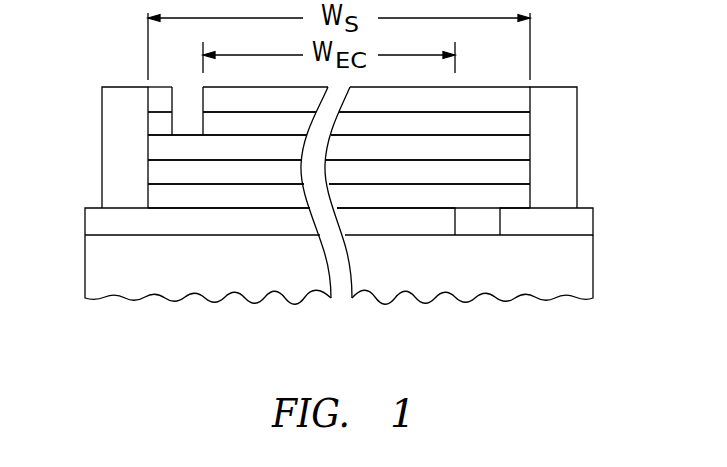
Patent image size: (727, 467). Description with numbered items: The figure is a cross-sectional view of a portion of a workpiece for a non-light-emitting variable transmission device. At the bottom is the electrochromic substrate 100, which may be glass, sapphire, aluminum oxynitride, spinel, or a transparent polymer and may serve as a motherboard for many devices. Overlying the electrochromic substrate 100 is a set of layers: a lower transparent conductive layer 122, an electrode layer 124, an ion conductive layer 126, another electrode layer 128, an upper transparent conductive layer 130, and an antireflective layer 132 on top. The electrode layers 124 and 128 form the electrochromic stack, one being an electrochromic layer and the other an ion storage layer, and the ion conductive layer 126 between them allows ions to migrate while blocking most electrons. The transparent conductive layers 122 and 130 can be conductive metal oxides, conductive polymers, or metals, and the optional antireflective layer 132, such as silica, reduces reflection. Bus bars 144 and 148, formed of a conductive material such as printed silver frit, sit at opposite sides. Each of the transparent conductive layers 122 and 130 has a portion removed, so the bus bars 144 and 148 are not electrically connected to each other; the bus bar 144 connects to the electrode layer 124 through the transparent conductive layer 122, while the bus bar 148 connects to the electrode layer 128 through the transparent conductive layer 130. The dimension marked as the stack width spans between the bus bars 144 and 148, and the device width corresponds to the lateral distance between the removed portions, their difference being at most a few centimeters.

The electrochromic substrate 100 is at (580, 283).
The transparent conductive layer 122 is at (95, 220).
The electrode layer 124 is at (193, 197).
The ion conductive layer 126 is at (258, 170).
The electrode layer 128 is at (366, 147).
The transparent conductive layer 130 is at (426, 127).
The antireflective layer 132 is at (457, 100).
The bus bar 144 is at (117, 155).
The bus bar 148 is at (570, 153).